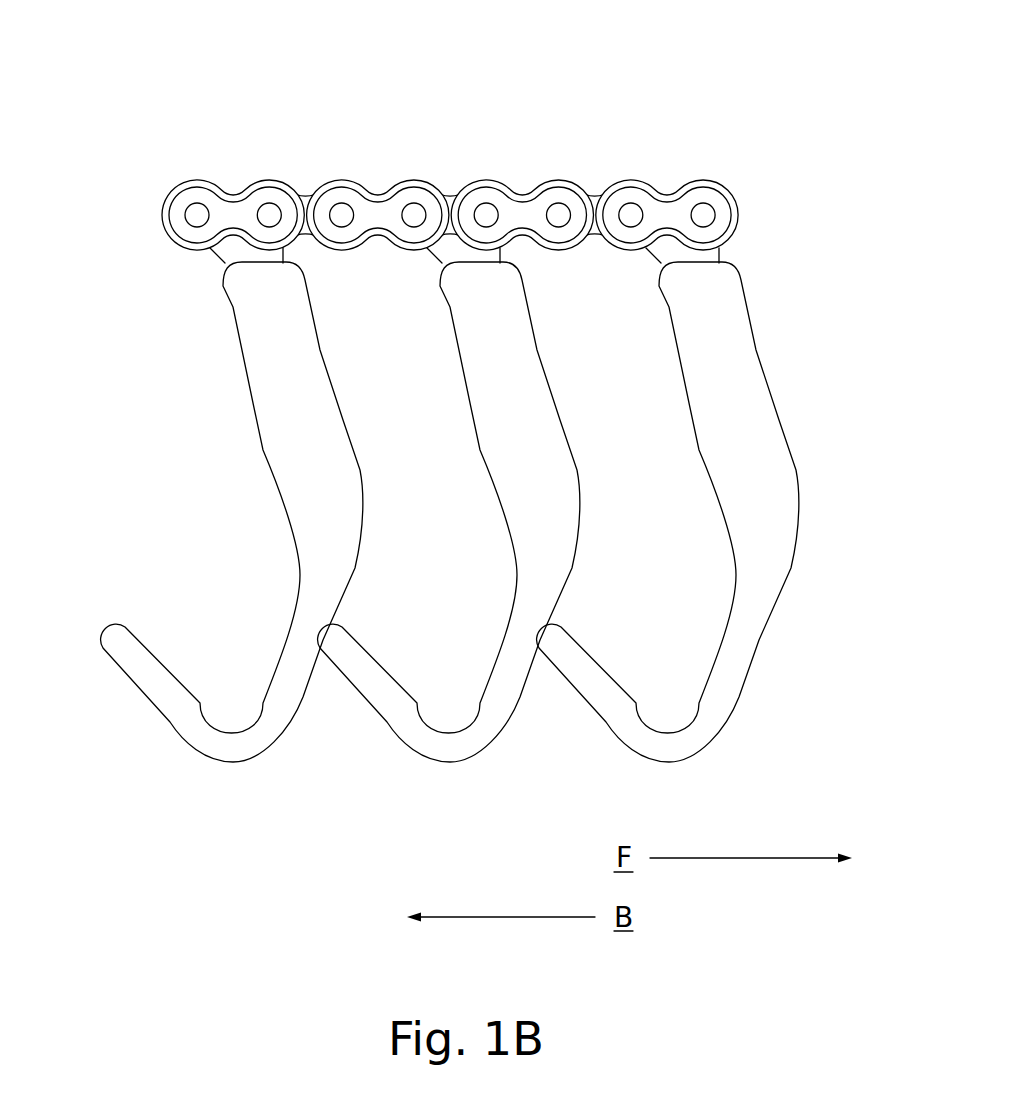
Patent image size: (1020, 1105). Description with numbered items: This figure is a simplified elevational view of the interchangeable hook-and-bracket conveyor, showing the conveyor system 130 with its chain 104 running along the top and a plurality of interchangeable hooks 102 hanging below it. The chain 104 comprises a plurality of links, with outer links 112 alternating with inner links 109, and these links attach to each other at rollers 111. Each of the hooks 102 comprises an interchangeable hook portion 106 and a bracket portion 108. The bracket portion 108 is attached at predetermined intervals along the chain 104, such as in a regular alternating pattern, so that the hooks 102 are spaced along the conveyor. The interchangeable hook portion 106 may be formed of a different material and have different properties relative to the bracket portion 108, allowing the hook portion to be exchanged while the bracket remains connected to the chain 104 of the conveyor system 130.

The conveyor system 130 is at (249, 148).
The chain 104 is at (451, 147).
The inner links 109 is at (305, 200).
The outer links 112 is at (449, 205).
The rollers 111 is at (702, 214).
The bracket portion 108 is at (234, 252).
The interchangeable hook portion 106 is at (254, 404).
The interchangeable hooks 102 is at (582, 749).